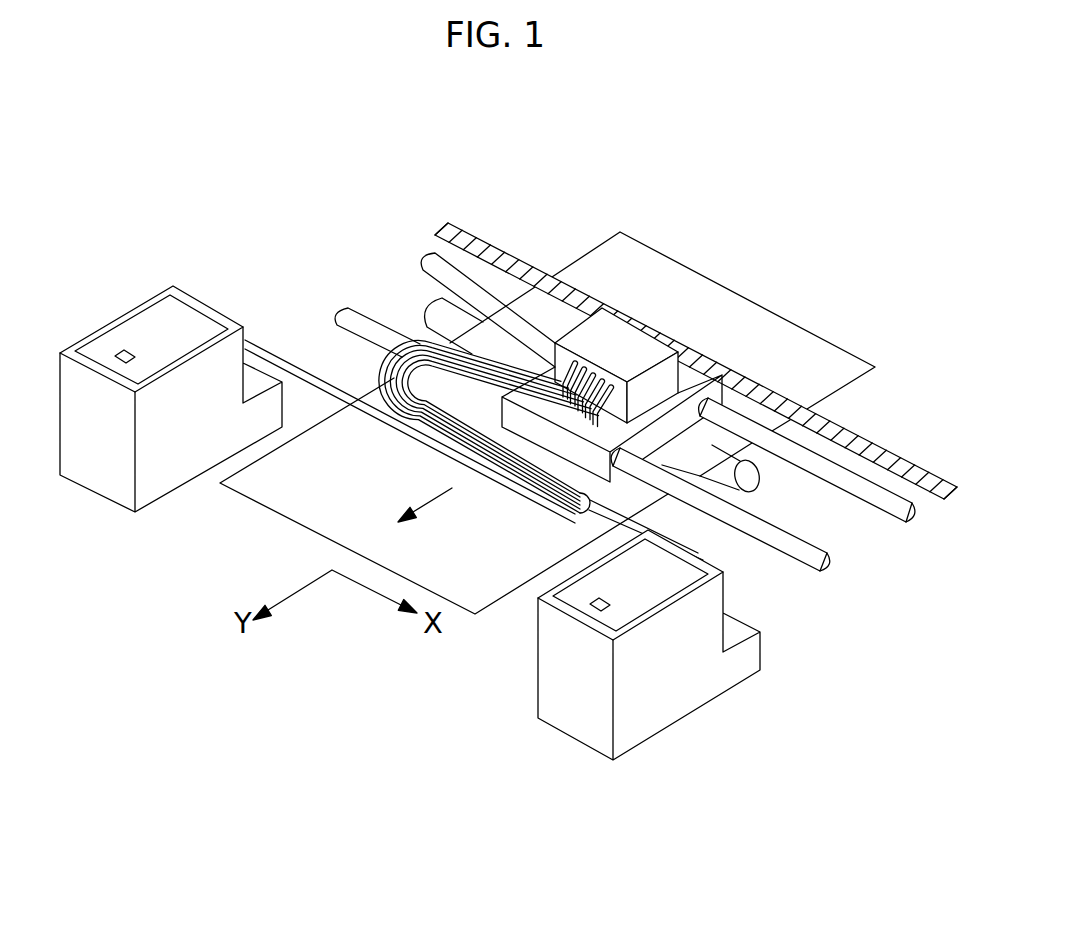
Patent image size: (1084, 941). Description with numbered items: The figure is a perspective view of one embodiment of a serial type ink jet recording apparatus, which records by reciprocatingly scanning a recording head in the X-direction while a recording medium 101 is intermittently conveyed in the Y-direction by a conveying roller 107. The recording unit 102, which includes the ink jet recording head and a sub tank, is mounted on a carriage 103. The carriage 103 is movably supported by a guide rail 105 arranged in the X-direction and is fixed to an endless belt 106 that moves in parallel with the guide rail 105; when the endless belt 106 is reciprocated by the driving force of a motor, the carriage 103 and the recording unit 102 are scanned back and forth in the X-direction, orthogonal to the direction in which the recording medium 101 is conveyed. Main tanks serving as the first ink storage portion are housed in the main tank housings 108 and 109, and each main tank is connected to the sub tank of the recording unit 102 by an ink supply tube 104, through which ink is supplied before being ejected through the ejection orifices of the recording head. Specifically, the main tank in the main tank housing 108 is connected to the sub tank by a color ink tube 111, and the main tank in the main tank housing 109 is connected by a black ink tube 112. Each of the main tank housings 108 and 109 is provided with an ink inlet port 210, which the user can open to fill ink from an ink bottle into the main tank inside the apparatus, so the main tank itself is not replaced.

The recording medium 101 is at (640, 258).
The recording unit 102 is at (622, 342).
The carriage 103 is at (697, 385).
The ink supply tube 104 is at (388, 387).
The guide rail 105 is at (345, 315).
The endless belt 106 is at (473, 242).
The conveying roller 107 is at (755, 473).
The main tank housing 108 is at (548, 651).
The main tank housing 109 is at (153, 297).
The color ink tube 111 is at (627, 512).
The black ink tube 112 is at (277, 355).
The ink inlet port 210 is at (118, 352).